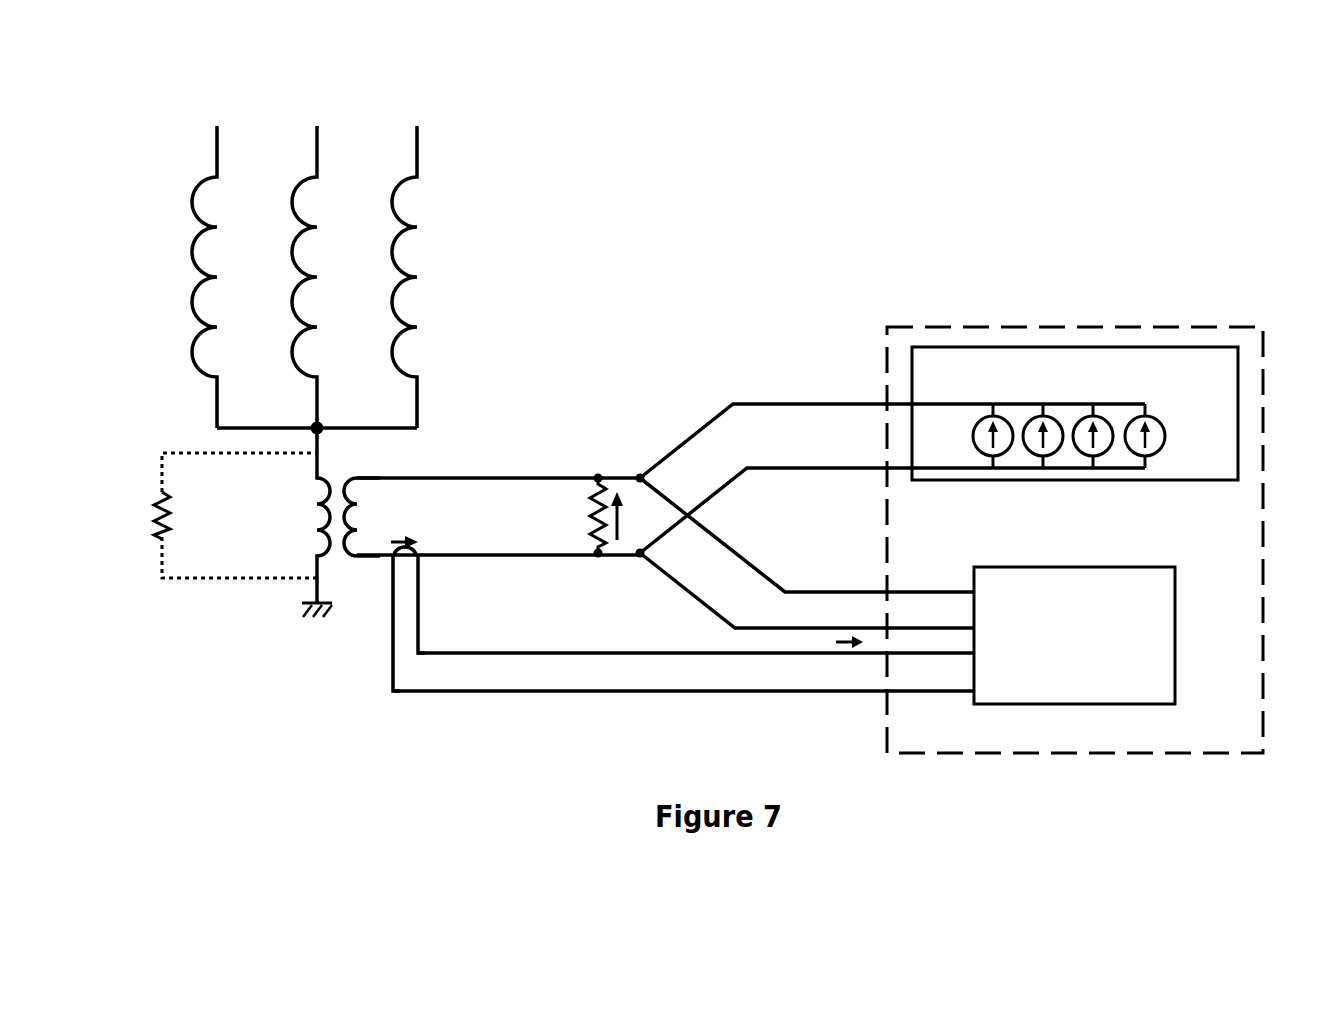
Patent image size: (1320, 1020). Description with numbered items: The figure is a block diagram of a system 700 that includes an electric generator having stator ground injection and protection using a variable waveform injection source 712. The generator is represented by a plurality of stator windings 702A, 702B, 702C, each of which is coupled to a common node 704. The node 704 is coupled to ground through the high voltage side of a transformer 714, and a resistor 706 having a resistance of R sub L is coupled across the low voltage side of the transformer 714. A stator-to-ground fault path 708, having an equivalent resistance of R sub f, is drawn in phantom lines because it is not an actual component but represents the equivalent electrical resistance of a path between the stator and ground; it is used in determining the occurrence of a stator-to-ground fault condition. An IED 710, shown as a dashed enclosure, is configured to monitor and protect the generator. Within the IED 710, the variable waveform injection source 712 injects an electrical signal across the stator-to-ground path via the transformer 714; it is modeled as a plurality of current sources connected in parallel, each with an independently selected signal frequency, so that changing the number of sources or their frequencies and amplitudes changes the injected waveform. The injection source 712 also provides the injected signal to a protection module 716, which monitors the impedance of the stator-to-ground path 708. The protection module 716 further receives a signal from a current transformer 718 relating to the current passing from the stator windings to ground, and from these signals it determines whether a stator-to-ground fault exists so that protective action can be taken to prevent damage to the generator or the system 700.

The system 700 is at (1228, 112).
The stator winding 702A is at (212, 137).
The stator winding 702B is at (315, 160).
The stator winding 702C is at (418, 153).
The node 704 is at (312, 428).
The resistor 706 is at (606, 490).
The stator-to-ground fault path 708 is at (150, 520).
The IED 710 is at (1003, 325).
The variable waveform injection source 712 is at (1185, 345).
The transformer 714 is at (313, 513).
The protection module 716 is at (1099, 686).
The current transformer 718 is at (418, 550).